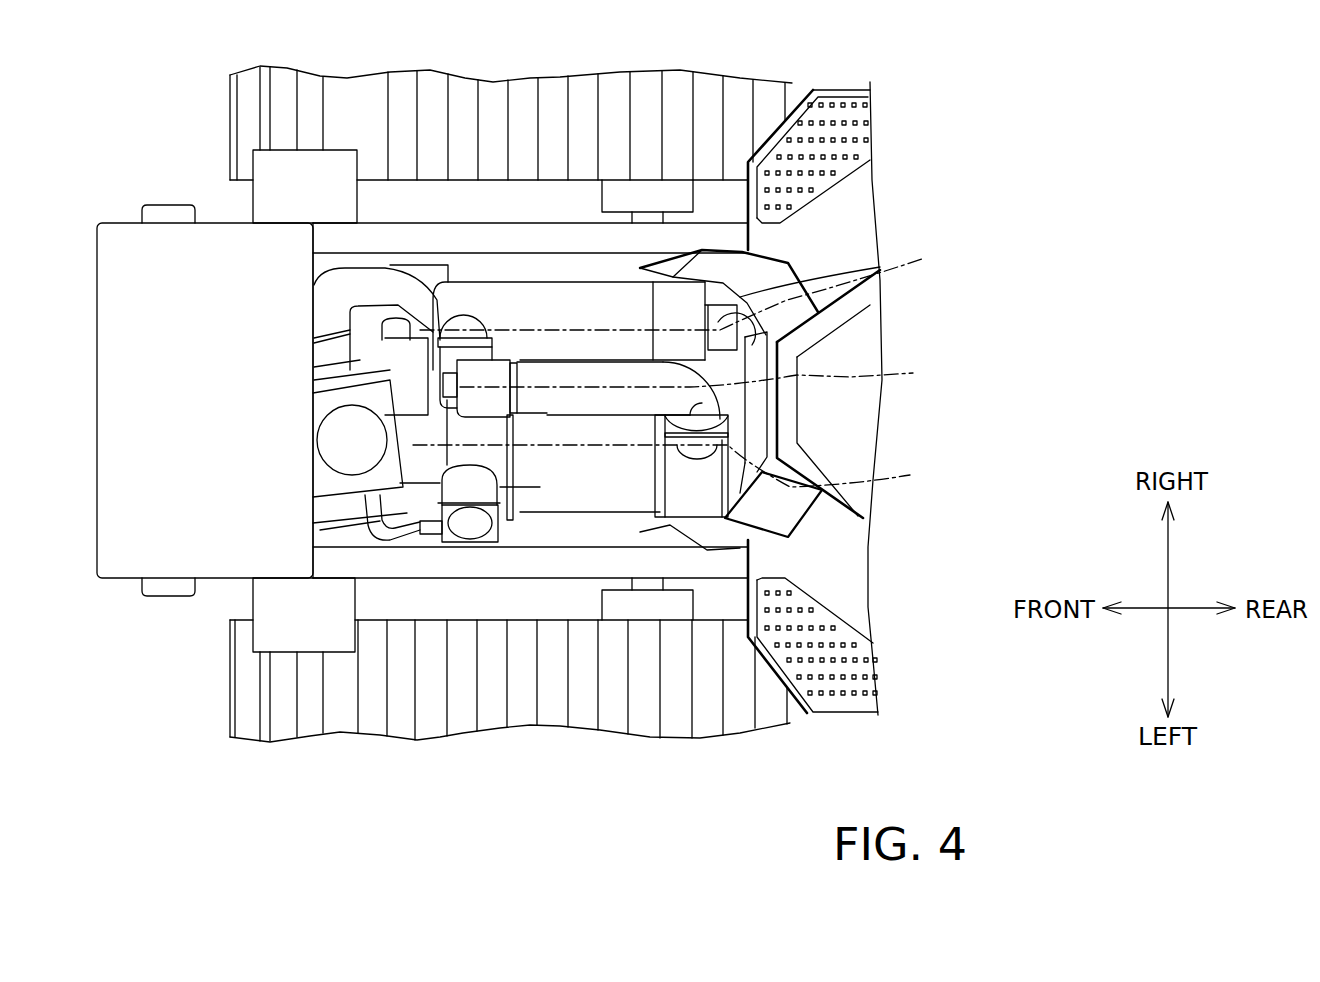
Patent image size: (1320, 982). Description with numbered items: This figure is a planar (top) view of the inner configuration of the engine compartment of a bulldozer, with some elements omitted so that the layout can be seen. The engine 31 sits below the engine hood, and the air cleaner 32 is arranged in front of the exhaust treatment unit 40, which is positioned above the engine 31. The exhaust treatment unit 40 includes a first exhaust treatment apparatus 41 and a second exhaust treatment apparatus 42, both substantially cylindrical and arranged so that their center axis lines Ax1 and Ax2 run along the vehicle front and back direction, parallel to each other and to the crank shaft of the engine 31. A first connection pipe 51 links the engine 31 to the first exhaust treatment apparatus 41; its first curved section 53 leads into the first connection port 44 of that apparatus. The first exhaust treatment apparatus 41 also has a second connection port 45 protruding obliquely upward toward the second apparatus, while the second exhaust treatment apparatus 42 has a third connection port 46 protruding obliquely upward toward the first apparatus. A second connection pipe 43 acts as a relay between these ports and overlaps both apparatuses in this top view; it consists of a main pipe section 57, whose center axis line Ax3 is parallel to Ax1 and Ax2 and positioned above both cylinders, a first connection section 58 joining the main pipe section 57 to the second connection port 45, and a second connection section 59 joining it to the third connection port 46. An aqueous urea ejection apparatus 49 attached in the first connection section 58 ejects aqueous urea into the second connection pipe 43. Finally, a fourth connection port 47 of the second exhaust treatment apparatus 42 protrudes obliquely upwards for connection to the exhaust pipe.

The engine 31 is at (381, 212).
The air cleaner 32 is at (375, 400).
The exhaust treatment unit 40 is at (585, 252).
The first exhaust treatment apparatus 41 is at (608, 195).
The second exhaust treatment apparatus 42 is at (580, 636).
The second connection pipe 43 is at (785, 512).
The first connection port 44 is at (810, 240).
The second connection port 45 is at (472, 212).
The third connection port 46 is at (745, 517).
The fourth connection port 47 is at (459, 590).
The aqueous urea ejection apparatus 49 is at (411, 579).
The first connection pipe 51 is at (818, 300).
The first curved section 53 is at (797, 355).
The main pipe section 57 is at (573, 570).
The first connection section 58 is at (465, 600).
The second connection section 59 is at (705, 410).
The center axis line Ax1 is at (698, 284).
The center axis line Ax2 is at (687, 469).
The center axis line Ax3 is at (713, 374).